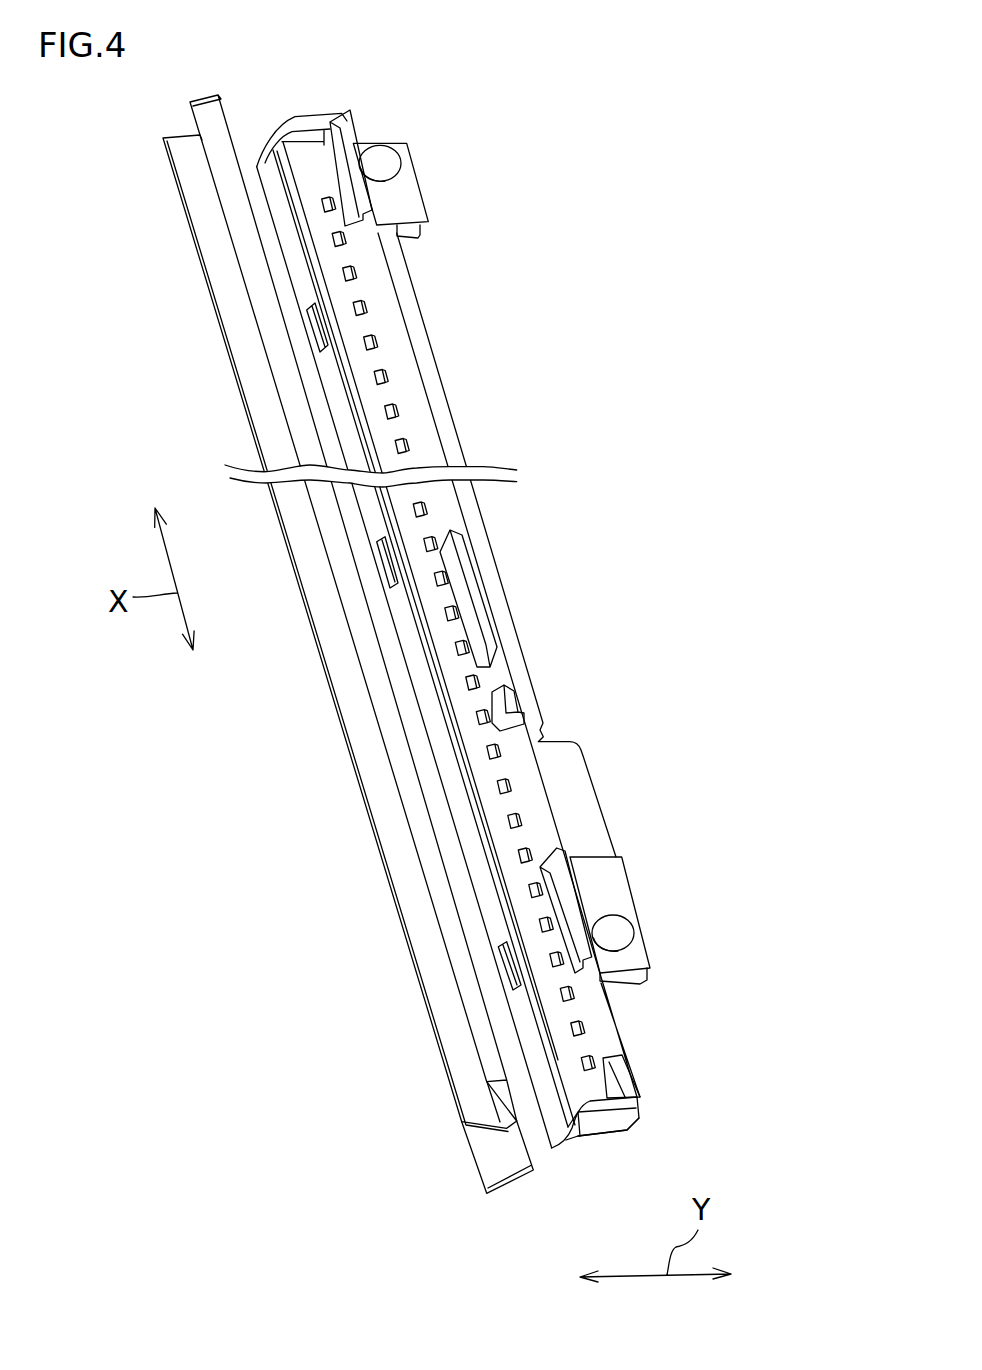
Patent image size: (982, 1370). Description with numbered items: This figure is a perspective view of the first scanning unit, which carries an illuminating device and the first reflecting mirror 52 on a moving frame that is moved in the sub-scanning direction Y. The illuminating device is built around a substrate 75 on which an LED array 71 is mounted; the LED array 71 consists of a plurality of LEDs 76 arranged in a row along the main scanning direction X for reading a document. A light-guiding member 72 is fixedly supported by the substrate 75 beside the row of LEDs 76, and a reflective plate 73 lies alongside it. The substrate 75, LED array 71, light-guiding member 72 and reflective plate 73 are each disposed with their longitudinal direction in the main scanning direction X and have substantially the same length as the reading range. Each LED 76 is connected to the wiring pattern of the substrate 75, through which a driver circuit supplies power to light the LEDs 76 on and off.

The first reflecting mirror 52 is at (495, 1163).
The LED array 71 is at (596, 1094).
The light-guiding member 72 is at (414, 662).
The reflective plate 73 is at (405, 870).
The substrate 75 is at (612, 1130).
The LEDs 76 is at (385, 368).